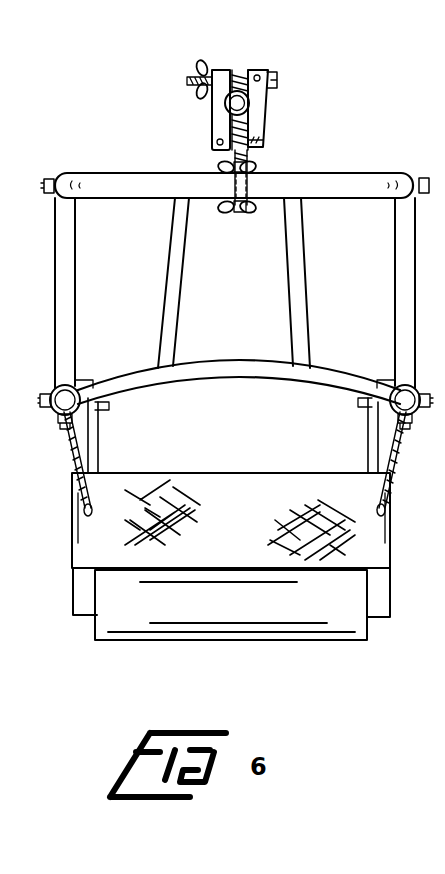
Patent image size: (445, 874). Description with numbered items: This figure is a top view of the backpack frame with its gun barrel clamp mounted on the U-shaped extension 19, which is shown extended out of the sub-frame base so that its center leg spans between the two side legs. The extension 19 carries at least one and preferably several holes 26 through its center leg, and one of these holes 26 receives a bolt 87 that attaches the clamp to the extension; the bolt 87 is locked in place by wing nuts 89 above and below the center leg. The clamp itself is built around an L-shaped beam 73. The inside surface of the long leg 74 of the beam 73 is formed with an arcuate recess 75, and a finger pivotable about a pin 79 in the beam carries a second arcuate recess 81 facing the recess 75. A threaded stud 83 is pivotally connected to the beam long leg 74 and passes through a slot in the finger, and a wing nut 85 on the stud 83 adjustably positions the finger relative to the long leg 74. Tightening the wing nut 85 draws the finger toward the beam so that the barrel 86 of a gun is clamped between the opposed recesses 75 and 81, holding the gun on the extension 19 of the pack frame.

The U-shaped extension 19 is at (377, 173).
The hole 26 is at (222, 182).
The L-shaped beam 73 is at (260, 143).
The long leg 74 is at (258, 122).
The arcuate recess 75 is at (250, 103).
The pin 79 is at (220, 140).
The arcuate recess 81 is at (227, 100).
The threaded stud 83 is at (193, 78).
The wing nut 85 is at (199, 68).
The barrel 86 is at (240, 80).
The bolt 87 is at (230, 210).
The wing nuts 89 is at (223, 167).